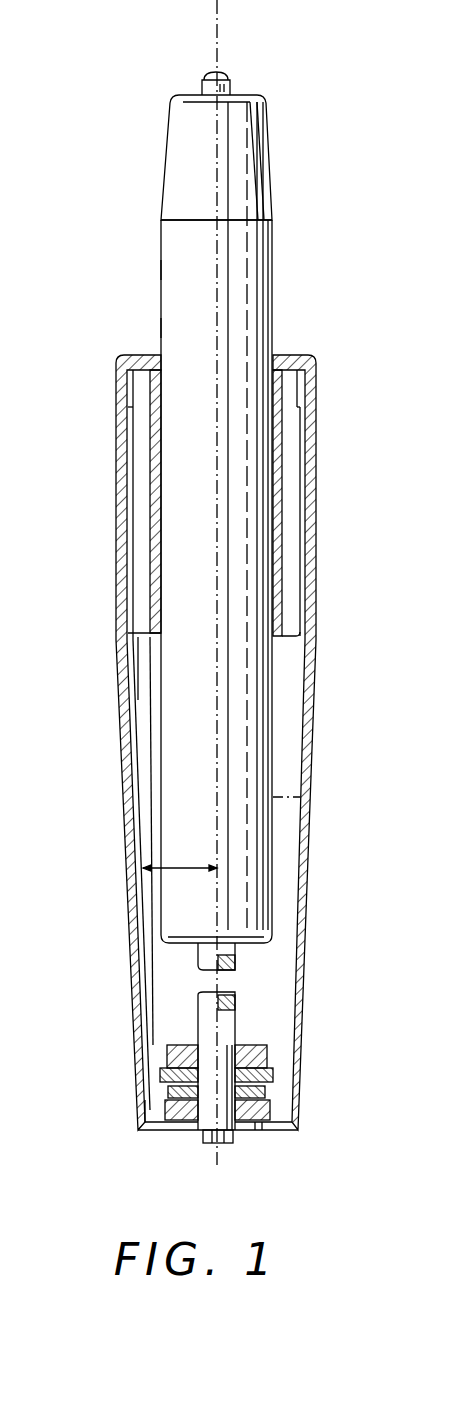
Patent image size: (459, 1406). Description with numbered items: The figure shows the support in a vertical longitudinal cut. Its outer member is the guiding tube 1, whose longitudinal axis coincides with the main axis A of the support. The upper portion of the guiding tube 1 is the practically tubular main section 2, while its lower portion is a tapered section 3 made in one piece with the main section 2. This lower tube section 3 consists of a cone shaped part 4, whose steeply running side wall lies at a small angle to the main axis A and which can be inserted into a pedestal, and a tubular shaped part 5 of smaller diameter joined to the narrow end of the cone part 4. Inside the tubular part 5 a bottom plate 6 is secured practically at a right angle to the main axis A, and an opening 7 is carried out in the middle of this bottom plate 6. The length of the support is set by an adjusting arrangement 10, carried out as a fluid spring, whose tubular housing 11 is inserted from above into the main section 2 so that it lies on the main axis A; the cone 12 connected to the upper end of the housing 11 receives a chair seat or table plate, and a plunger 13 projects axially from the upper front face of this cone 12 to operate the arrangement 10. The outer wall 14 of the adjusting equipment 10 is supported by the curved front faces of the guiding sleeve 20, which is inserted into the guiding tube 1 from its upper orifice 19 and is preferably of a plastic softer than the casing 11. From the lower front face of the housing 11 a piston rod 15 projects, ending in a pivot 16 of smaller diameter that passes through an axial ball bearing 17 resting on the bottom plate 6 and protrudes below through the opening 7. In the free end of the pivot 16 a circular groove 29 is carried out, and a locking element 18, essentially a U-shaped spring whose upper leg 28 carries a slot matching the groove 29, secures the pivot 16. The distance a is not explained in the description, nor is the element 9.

The guiding tube 1 is at (319, 790).
The main section 2 is at (315, 598).
The tapered section 3 is at (300, 988).
The cone shaped part 4 is at (305, 918).
The tubular shaped part 5 is at (268, 1060).
The bottom plate 6 is at (290, 1130).
The opening 7 is at (145, 1125).
The inner sleeve 9 is at (124, 906).
The arrangement for adjusting the length 10 is at (275, 268).
The tubular shaped housing 11 is at (160, 327).
The cone 12 is at (167, 160).
The plunger 13 is at (200, 80).
The outer wall 14 is at (160, 270).
The piston rod 15 is at (196, 958).
The pivot 16 is at (228, 1142).
The axial ball bearing 17 is at (170, 1092).
The locking element 18 is at (262, 1135).
The upper orifice 19 is at (317, 372).
The guiding sleeve 20 is at (298, 348).
The upper leg 28 is at (270, 1110).
The circular groove 29 is at (206, 1135).
The main axis A is at (224, 72).
The distance a is at (180, 856).